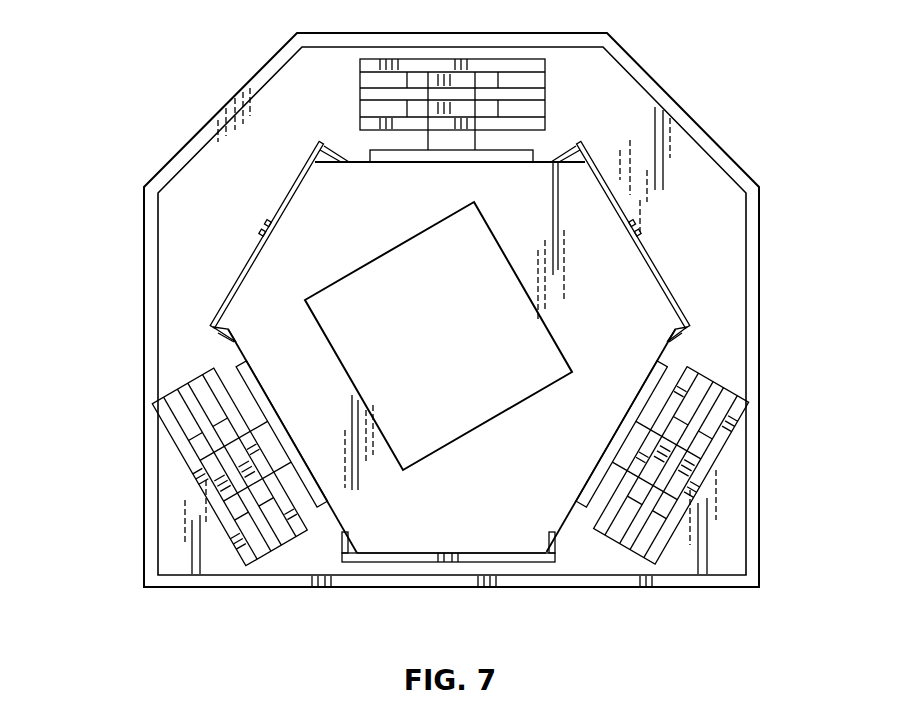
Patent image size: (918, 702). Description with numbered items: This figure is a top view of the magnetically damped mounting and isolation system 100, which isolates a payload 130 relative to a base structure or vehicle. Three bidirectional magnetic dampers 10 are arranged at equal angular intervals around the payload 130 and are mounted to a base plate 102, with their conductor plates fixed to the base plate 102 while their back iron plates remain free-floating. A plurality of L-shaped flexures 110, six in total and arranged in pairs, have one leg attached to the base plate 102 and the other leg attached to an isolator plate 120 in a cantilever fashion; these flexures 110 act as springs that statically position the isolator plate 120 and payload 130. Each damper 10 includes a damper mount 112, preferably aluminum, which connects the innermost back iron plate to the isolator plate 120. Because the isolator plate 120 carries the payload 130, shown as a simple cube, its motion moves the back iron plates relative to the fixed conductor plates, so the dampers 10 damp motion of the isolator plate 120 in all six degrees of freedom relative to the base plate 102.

The magnetically damped mounting and isolation system 100 is at (135, 68).
The bidirectional magnetic damper 10 is at (510, 55).
The base plate 102 is at (697, 185).
The L-shaped flexure 110 is at (286, 197).
The damper mount 112 is at (370, 155).
The isolator plate 120 is at (487, 540).
The payload 130 is at (547, 366).